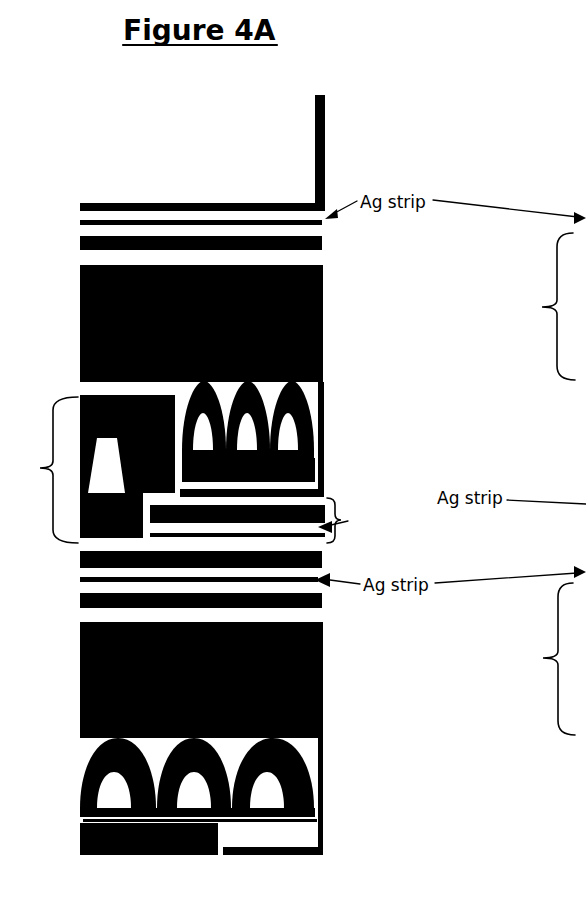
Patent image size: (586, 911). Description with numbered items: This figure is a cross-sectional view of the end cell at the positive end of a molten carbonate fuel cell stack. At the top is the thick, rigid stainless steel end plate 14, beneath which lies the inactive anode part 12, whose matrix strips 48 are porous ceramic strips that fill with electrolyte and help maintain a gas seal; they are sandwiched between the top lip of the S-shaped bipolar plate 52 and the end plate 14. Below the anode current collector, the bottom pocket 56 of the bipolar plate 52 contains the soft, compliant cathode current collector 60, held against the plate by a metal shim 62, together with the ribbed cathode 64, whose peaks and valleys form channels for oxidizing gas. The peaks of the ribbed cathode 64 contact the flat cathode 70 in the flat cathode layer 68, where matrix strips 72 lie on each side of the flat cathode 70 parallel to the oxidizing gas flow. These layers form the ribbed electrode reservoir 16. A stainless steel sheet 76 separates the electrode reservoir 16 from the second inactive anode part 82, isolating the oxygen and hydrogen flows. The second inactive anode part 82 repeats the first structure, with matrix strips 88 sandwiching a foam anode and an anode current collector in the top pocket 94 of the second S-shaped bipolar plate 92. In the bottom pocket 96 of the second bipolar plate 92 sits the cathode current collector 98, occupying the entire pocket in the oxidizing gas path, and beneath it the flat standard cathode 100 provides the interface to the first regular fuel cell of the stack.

The inactive anode part 12 is at (544, 306).
The end plate 14 is at (585, 153).
The ribbed electrode reservoir 16 is at (48, 470).
The matrix strips 48 is at (585, 243).
The bipolar plate 52 is at (80, 338).
The bottom pocket 56 is at (303, 393).
The soft compliant cathode current collector 60 is at (306, 408).
The metal shim 62 is at (323, 476).
The ribbed cathode 64 is at (78, 403).
The flat cathode layer 68 is at (433, 499).
The flat cathode 70 is at (80, 537).
The matrix strips 72 is at (578, 526).
The stainless steel sheet 76 is at (322, 550).
The second inactive anode part 82 is at (544, 659).
The matrix strips 88 is at (585, 603).
The second bipolar plate 92 is at (80, 686).
The top pocket 94 is at (585, 745).
The bottom pocket 96 is at (303, 768).
The cathode current collector 98 is at (253, 800).
The flat standard cathode 100 is at (135, 856).